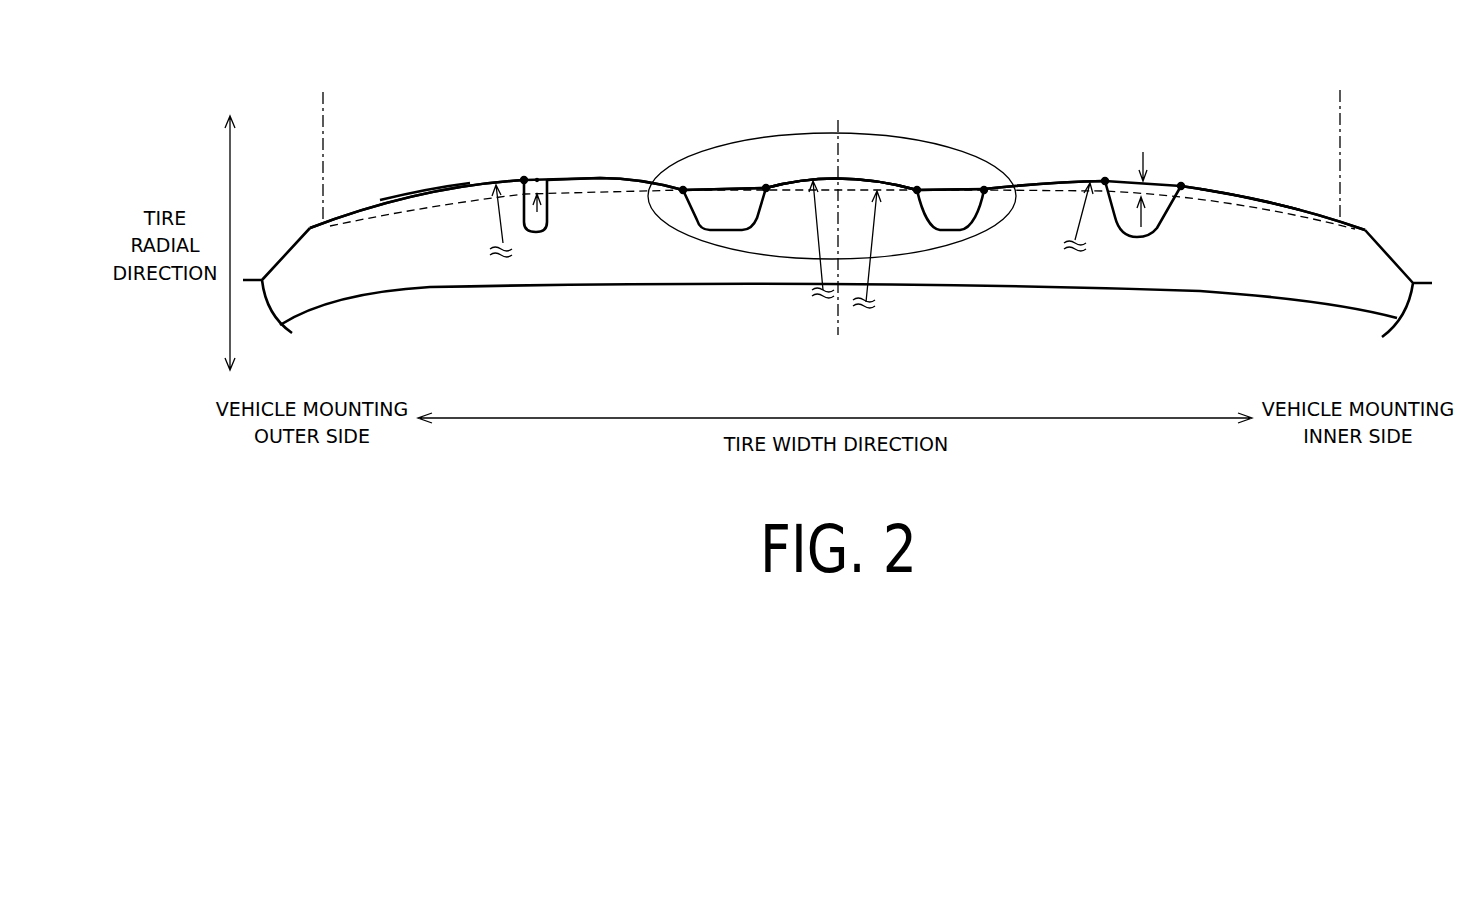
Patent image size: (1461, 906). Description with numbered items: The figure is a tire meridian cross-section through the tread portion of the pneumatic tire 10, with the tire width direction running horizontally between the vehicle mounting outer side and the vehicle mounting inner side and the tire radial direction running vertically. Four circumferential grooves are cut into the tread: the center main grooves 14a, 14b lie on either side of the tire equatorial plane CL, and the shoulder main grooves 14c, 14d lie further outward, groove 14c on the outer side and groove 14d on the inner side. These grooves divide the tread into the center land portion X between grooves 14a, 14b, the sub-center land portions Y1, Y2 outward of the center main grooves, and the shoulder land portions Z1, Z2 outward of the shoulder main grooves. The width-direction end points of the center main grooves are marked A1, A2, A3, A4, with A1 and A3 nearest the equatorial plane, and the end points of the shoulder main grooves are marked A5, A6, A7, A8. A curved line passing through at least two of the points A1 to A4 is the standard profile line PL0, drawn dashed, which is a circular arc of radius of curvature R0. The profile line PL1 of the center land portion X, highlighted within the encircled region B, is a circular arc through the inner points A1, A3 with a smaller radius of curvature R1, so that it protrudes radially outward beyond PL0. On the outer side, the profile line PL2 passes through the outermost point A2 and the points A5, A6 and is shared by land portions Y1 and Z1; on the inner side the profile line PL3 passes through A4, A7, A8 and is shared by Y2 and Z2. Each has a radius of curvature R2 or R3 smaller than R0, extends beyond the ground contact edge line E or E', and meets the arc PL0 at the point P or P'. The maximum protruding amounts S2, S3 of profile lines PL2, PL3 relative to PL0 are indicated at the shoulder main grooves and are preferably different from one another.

The pneumatic tire 10 is at (627, 163).
The center main groove 14a is at (727, 212).
The center main groove 14b is at (945, 215).
The shoulder main groove 14c is at (540, 233).
The shoulder main groove 14d is at (1148, 224).
The end point of center main groove A1 is at (766, 188).
The end point of center main groove A2 is at (683, 190).
The end point of center main groove A3 is at (917, 190).
The end point of center main groove A4 is at (984, 190).
The end point of shoulder main groove A5 is at (537, 178).
The end point of shoulder main groove A6 is at (524, 180).
The end point of shoulder main groove A7 is at (1105, 181).
The end point of shoulder main groove A8 is at (1181, 186).
The center region (enlarged area) B is at (882, 134).
The tire equatorial plane CL is at (838, 213).
The ground contact edge line E is at (324, 143).
The ground contact edge line E' is at (1345, 139).
The intersection point P is at (277, 246).
The intersection point P' is at (1398, 245).
The standard profile line PL0 is at (597, 190).
The profile line of center land portion PL1 is at (790, 183).
The profile line PL2 is at (436, 192).
The profile line PL3 is at (1266, 200).
The radius of curvature R0 is at (880, 249).
The radius of curvature R1 is at (810, 239).
The radius of curvature R2 is at (490, 221).
The radius of curvature R3 is at (1070, 217).
The maximum protruding amount S2 is at (549, 186).
The maximum protruding amount S3 is at (1155, 187).
The center land portion X is at (802, 235).
The sub-center land portion Y1 is at (618, 210).
The sub-center land portion Y2 is at (1032, 226).
The shoulder land portion Z1 is at (422, 228).
The shoulder land portion Z2 is at (1242, 226).